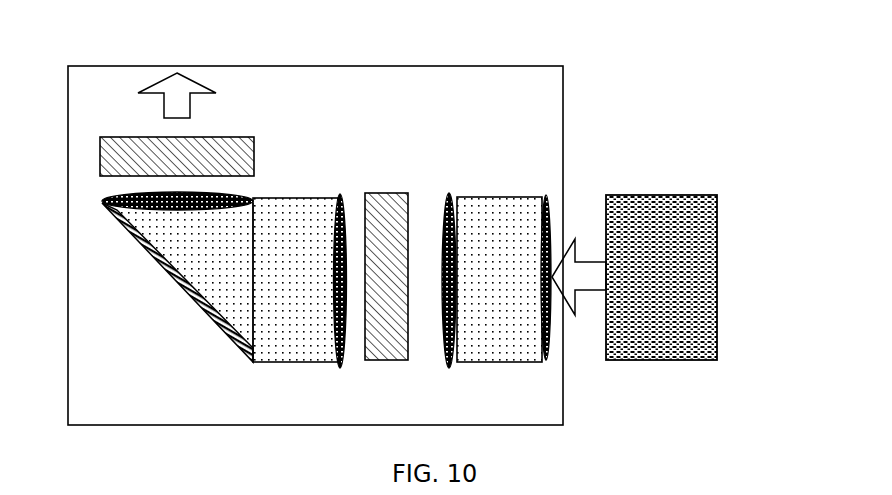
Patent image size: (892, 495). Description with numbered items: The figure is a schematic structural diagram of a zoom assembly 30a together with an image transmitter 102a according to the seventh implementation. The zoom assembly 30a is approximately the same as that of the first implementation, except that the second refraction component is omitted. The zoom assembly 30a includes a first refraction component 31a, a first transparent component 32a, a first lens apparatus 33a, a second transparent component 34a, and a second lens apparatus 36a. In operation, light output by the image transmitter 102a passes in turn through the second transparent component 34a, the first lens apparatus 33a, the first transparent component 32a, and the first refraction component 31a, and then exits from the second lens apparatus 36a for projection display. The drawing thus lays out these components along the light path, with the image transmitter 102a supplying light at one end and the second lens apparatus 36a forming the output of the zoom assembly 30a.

The zoom assembly 30a is at (482, 65).
The first refraction component 31a is at (213, 253).
The first transparent component 32a is at (288, 190).
The first lens apparatus 33a is at (392, 193).
The second transparent component 34a is at (482, 197).
The second lens apparatus 36a is at (233, 156).
The image transmitter 102a is at (688, 220).